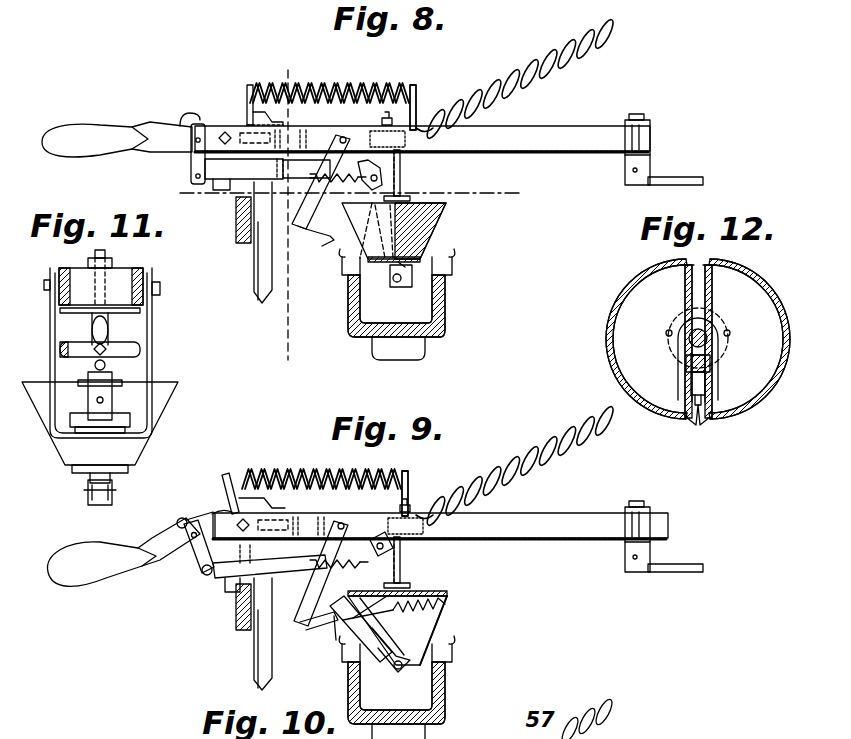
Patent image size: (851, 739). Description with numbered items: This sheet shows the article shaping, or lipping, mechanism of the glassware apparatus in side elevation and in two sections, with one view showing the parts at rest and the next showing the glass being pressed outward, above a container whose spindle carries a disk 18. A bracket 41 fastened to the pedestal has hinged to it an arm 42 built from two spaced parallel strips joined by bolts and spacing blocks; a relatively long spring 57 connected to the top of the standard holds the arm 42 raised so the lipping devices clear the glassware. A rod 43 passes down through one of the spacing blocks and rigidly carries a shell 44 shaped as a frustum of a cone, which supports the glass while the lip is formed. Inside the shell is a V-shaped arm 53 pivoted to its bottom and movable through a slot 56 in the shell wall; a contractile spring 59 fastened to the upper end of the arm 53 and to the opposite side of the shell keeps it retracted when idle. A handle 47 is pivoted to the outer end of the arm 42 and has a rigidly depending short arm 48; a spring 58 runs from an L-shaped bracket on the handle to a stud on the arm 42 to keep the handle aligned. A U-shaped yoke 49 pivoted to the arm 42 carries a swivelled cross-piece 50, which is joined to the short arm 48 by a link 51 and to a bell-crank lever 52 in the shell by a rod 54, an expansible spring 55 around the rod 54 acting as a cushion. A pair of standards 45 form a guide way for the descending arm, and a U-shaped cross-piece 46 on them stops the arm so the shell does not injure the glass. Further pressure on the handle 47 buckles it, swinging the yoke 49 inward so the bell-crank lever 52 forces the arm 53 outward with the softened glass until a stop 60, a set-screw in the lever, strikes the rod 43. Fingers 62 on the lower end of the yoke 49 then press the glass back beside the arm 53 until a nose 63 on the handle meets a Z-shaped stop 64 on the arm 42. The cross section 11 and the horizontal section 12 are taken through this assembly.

In FIG. 8, the section line 11— 11 is at (286, 213).
In FIG. 8, the section line 12— 12 is at (350, 187).
In FIG. 8, the disk 18 is at (346, 292).
In FIG. 9, the disk 18 is at (452, 670).
In FIG. 8, the bracket 41 is at (676, 177).
In FIG. 9, the bracket 41 is at (676, 566).
In FIG. 8, the arm 42 is at (422, 132).
In FIG. 9, the arm 42 is at (440, 519).
In FIG. 11, the arm 42 is at (107, 275).
In FIG. 8, the rod 43 is at (415, 186).
In FIG. 9, the rod 43 is at (415, 562).
In FIG. 11, the rod 43 is at (100, 318).
In FIG. 12, the rod 43 is at (709, 340).
In FIG. 8, the shell 44 is at (448, 210).
In FIG. 9, the shell 44 is at (450, 598).
In FIG. 11, the shell 44 is at (170, 395).
In FIG. 12, the shell 44 is at (621, 323).
In FIG. 8, the standards 45 is at (254, 246).
In FIG. 9, the standards 45 is at (254, 640).
In FIG. 8, the U-shaped cross-piece 46 is at (236, 233).
In FIG. 9, the U-shaped cross-piece 46 is at (236, 620).
In FIG. 8, the handle 47 is at (117, 139).
In FIG. 9, the handle 47 is at (130, 549).
In FIG. 8, the short arm 48 is at (191, 160).
In FIG. 9, the short arm 48 is at (198, 566).
In FIG. 8, the U-shaped yoke 49 is at (330, 168).
In FIG. 9, the U-shaped yoke 49 is at (325, 556).
In FIG. 11, the U-shaped yoke 49 is at (152, 334).
In FIG. 11, the cross-piece 50 is at (70, 340).
In FIG. 8, the link 51 is at (218, 182).
In FIG. 9, the link 51 is at (222, 578).
In FIG. 11, the link 51 is at (60, 350).
In FIG. 8, the bell-crank lever 52 is at (372, 170).
In FIG. 9, the bell-crank lever 52 is at (378, 538).
In FIG. 12, the bell-crank lever 52 is at (710, 364).
In FIG. 8, the V-shaped arm 53 is at (350, 244).
In FIG. 9, the V-shaped arm 53 is at (345, 635).
In FIG. 11, the V-shaped arm 53 is at (100, 395).
In FIG. 12, the V-shaped arm 53 is at (703, 405).
In FIG. 8, the rod 54 is at (340, 160).
In FIG. 9, the rod 54 is at (329, 573).
In FIG. 8, the expansible spring 55 is at (338, 195).
In FIG. 9, the expansible spring 55 is at (339, 576).
In FIG. 11, the slot 56 is at (90, 400).
In FIG. 12, the slot 56 is at (696, 420).
In FIG. 8, the spring 57 is at (546, 68).
In FIG. 9, the spring 57 is at (536, 457).
In FIG. 8, the spring 58 is at (350, 86).
In FIG. 9, the spring 58 is at (300, 474).
In FIG. 9, the contractile spring 59 is at (435, 597).
In FIG. 8, the stop 60 is at (399, 188).
In FIG. 9, the stop 60 is at (400, 582).
In FIG. 8, the fingers 62 is at (310, 239).
In FIG. 9, the fingers 62 is at (320, 612).
In FIG. 9, the nose 63 is at (222, 507).
In FIG. 8, the Z-shaped stop 64 is at (249, 105).
In FIG. 9, the Z-shaped stop 64 is at (232, 482).